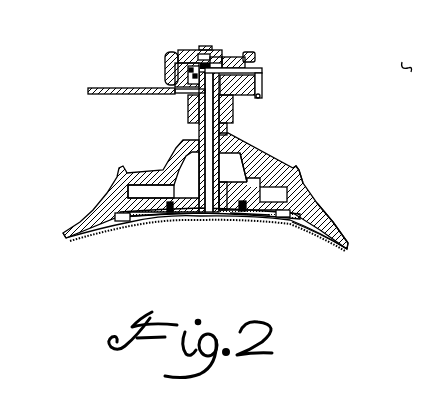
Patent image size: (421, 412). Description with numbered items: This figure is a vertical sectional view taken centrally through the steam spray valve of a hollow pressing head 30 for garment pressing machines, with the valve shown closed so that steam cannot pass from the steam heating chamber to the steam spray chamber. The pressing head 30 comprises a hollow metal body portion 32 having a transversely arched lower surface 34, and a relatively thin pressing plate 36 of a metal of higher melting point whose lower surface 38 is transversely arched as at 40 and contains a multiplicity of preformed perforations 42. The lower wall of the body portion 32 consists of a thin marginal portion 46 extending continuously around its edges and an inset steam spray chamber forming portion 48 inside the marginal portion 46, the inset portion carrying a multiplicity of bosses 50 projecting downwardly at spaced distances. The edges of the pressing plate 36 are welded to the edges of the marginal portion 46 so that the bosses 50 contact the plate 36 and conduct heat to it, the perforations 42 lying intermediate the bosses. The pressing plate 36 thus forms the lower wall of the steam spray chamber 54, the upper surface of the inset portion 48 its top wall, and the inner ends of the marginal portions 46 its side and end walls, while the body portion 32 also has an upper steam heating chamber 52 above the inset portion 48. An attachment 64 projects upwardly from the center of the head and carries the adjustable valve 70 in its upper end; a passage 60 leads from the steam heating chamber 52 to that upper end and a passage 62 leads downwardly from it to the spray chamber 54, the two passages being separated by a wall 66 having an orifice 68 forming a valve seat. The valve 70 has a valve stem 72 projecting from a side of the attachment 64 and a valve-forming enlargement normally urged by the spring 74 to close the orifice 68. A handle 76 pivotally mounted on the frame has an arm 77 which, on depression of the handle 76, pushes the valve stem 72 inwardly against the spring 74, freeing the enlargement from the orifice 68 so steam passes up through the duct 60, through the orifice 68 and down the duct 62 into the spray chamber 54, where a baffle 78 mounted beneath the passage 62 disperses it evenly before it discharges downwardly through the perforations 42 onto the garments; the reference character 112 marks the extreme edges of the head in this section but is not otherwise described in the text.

The pressing head 30 is at (330, 218).
The hollow body portion 32 is at (300, 186).
The transversely arched lower surface 34 is at (325, 240).
The pressing plate 36 is at (300, 233).
The lower surface of pressing plate 38 is at (162, 217).
The transversely arched portion 40 is at (208, 218).
The preformed perforations 42 is at (290, 230).
The thin marginal portion 46 is at (92, 235).
The inset steam spray chamber forming portion 48 is at (150, 220).
The bosses 50 is at (132, 222).
The steam heating chamber 52 is at (145, 190).
The steam spray chamber 54 is at (248, 215).
The passage 60 is at (188, 122).
The passage 62 is at (219, 148).
The attachment 64 is at (212, 46).
The wall 66 is at (223, 58).
The orifice 68 is at (232, 63).
The adjustable valve 70 is at (206, 46).
The valve stem 72 is at (248, 70).
The spring 74 is at (171, 52).
The handle 76 is at (117, 88).
The arm 77 is at (262, 90).
The baffle 78 is at (221, 218).
The dome tips 112 is at (63, 236).